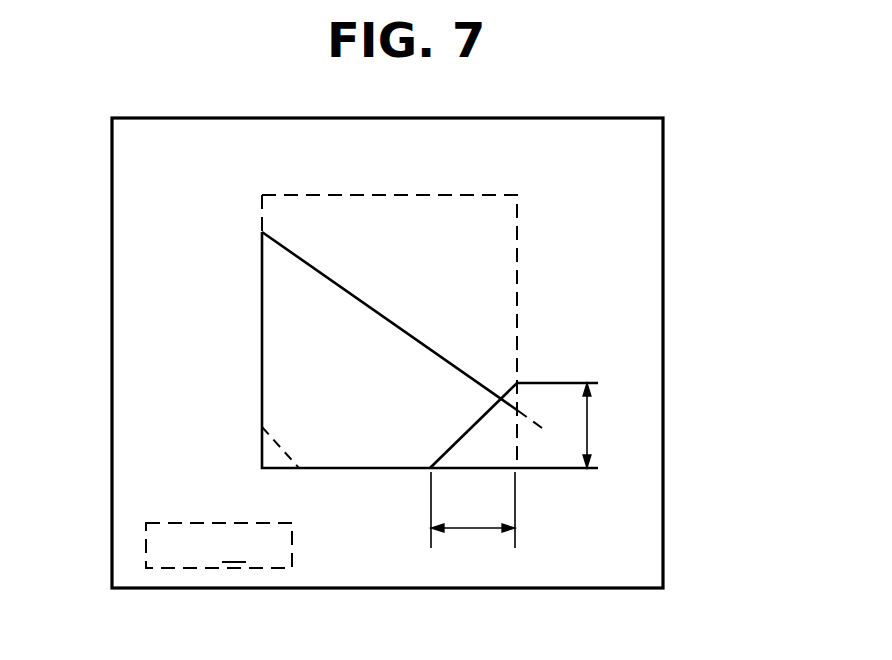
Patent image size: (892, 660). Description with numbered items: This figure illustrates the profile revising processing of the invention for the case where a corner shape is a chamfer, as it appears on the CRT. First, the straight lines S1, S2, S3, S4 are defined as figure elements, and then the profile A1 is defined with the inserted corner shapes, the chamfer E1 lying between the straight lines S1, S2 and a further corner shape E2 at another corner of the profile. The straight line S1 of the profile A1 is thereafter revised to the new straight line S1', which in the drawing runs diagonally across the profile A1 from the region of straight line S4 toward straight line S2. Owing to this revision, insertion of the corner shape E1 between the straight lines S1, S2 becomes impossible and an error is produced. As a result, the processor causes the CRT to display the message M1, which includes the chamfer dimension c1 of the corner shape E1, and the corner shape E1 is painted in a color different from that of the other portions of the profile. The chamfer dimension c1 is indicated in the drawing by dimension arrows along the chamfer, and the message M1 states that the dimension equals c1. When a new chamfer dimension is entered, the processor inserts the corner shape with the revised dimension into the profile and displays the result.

The element CRT is at (670, 329).
The profile A1 is at (503, 193).
The corner shape E1 is at (495, 440).
The corner shape E2 is at (262, 452).
The new straight line S1' is at (261, 160).
The straight line S1 is at (464, 138).
The straight line S2 is at (518, 216).
The straight line S3 is at (402, 468).
The straight line S4 is at (262, 313).
The message M1 is at (205, 568).
The chamfer dimension c1 is at (511, 465).